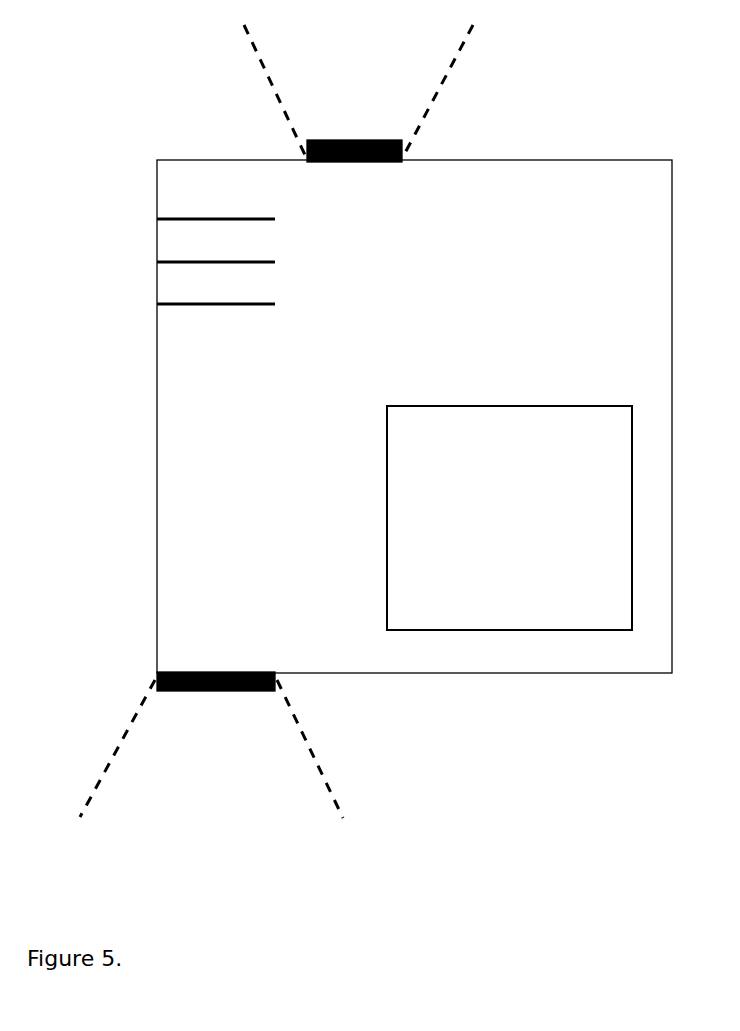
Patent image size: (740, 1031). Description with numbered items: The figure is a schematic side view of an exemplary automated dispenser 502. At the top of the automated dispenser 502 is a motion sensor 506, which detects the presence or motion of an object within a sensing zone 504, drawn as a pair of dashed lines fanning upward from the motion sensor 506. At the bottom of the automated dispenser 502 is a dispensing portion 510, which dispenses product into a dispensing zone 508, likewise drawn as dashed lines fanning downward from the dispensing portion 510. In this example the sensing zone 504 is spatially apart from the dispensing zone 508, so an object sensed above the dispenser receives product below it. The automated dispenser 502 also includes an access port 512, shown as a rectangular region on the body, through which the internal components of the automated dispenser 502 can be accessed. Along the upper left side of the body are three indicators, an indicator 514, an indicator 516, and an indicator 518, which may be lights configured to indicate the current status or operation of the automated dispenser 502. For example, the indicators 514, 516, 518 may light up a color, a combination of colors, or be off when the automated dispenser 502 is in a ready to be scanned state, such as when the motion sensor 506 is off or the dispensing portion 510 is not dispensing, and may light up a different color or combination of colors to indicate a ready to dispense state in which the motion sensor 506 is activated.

The automated dispenser 502 is at (157, 462).
The sensing zone 504 is at (466, 98).
The motion sensor 506 is at (355, 162).
The dispensing zone 508 is at (345, 798).
The dispensing portion 510 is at (215, 672).
The access port 512 is at (509, 518).
The indicator 514 is at (157, 219).
The indicator 516 is at (157, 262).
The indicator 518 is at (157, 304).